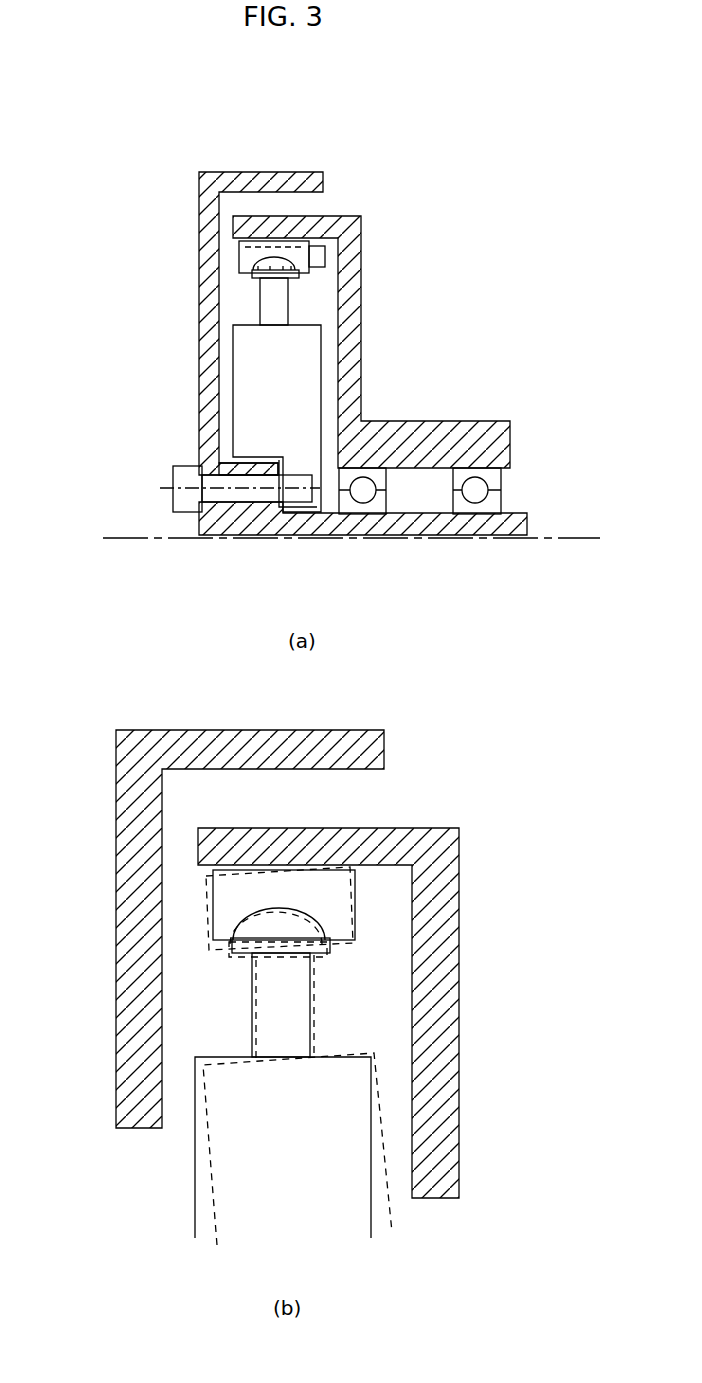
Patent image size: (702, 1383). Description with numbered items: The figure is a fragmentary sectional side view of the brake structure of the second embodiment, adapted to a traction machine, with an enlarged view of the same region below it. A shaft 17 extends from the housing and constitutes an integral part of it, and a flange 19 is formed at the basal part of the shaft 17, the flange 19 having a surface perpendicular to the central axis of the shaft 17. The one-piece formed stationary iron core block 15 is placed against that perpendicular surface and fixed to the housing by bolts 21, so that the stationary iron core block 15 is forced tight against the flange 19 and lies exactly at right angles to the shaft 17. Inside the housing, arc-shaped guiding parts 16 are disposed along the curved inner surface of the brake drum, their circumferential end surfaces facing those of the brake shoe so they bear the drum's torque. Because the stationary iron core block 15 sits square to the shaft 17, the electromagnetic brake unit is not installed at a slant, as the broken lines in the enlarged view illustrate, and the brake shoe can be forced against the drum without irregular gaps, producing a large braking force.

The stationary iron core block 15 is at (420, 425).
The guiding part 16 is at (327, 252).
The shaft 17 is at (527, 525).
The flange 19 is at (218, 473).
The bolt 21 is at (173, 478).